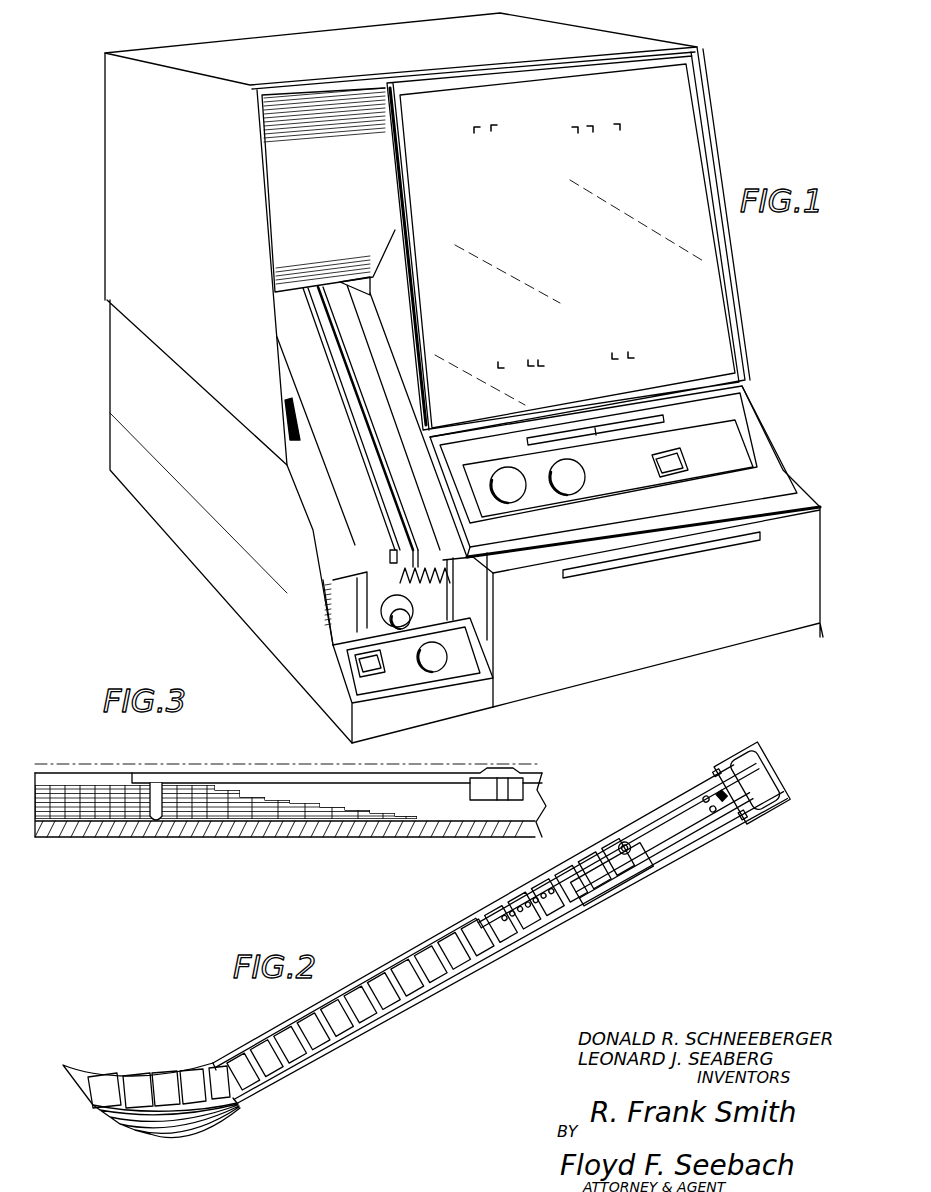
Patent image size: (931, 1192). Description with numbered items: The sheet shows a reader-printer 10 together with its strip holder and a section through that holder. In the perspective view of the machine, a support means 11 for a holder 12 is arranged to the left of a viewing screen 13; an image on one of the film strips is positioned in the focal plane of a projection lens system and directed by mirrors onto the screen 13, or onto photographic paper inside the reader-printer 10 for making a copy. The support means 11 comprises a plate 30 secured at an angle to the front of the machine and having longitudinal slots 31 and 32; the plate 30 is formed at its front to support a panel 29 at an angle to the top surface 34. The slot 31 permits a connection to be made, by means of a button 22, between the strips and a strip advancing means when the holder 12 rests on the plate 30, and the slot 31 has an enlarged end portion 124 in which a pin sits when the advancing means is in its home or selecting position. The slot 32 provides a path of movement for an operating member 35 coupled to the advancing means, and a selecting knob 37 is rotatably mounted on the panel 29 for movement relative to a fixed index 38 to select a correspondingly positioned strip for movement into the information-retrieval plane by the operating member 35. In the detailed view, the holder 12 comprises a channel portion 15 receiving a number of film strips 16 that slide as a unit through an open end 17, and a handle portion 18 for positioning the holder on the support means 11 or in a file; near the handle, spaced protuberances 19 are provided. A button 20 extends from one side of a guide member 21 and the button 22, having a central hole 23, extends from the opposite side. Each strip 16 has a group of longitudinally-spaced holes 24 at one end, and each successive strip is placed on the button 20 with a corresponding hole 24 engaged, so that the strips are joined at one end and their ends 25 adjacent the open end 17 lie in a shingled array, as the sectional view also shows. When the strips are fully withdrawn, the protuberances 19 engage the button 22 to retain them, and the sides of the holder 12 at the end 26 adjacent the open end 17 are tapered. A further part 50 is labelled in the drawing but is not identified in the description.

In FIG. 1, the reader-printer 10 is at (95, 172).
In FIG. 1, the support means 11 is at (305, 375).
In FIG. 3, the holder 12 is at (105, 845).
In FIG. 2, the holder 12 is at (668, 800).
In FIG. 1, the viewing screen 13 is at (556, 250).
In FIG. 3, the channel portion 15 is at (285, 828).
In FIG. 2, the channel portion 15 is at (560, 918).
In FIG. 3, the film strips 16 is at (90, 785).
In FIG. 2, the film strips 16 is at (110, 1077).
In FIG. 2, the open end 17 is at (237, 1108).
In FIG. 2, the handle portion 18 is at (775, 770).
In FIG. 2, the spaced protuberances 19 is at (708, 796).
In FIG. 3, the button 20 is at (155, 822).
In FIG. 3, the guide member 21 is at (210, 783).
In FIG. 2, the guide member 21 is at (593, 870).
In FIG. 3, the button 22 is at (513, 800).
In FIG. 2, the button 22 is at (640, 870).
In FIG. 3, the central hole 23 is at (482, 800).
In FIG. 2, the central hole 23 is at (622, 845).
In FIG. 3, the longitudinally-spaced holes 24 is at (205, 820).
In FIG. 2, the longitudinally-spaced holes 24 is at (534, 925).
In FIG. 2, the ends 25 is at (120, 1135).
In FIG. 2, the end 26 is at (216, 1060).
In FIG. 1, the panel 29 is at (433, 598).
In FIG. 1, the plate 30 is at (337, 473).
In FIG. 1, the longitudinal slot 31 is at (373, 413).
In FIG. 1, the longitudinal slot 32 is at (362, 443).
In FIG. 1, the top surface 34 is at (405, 425).
In FIG. 1, the operating member 35 is at (390, 583).
In FIG. 1, the selecting knob 37 is at (370, 618).
In FIG. 1, the fixed index 38 is at (390, 592).
In FIG. 2, the locating tabs 50 is at (720, 775).
In FIG. 1, the enlarged end portion 124 is at (477, 560).